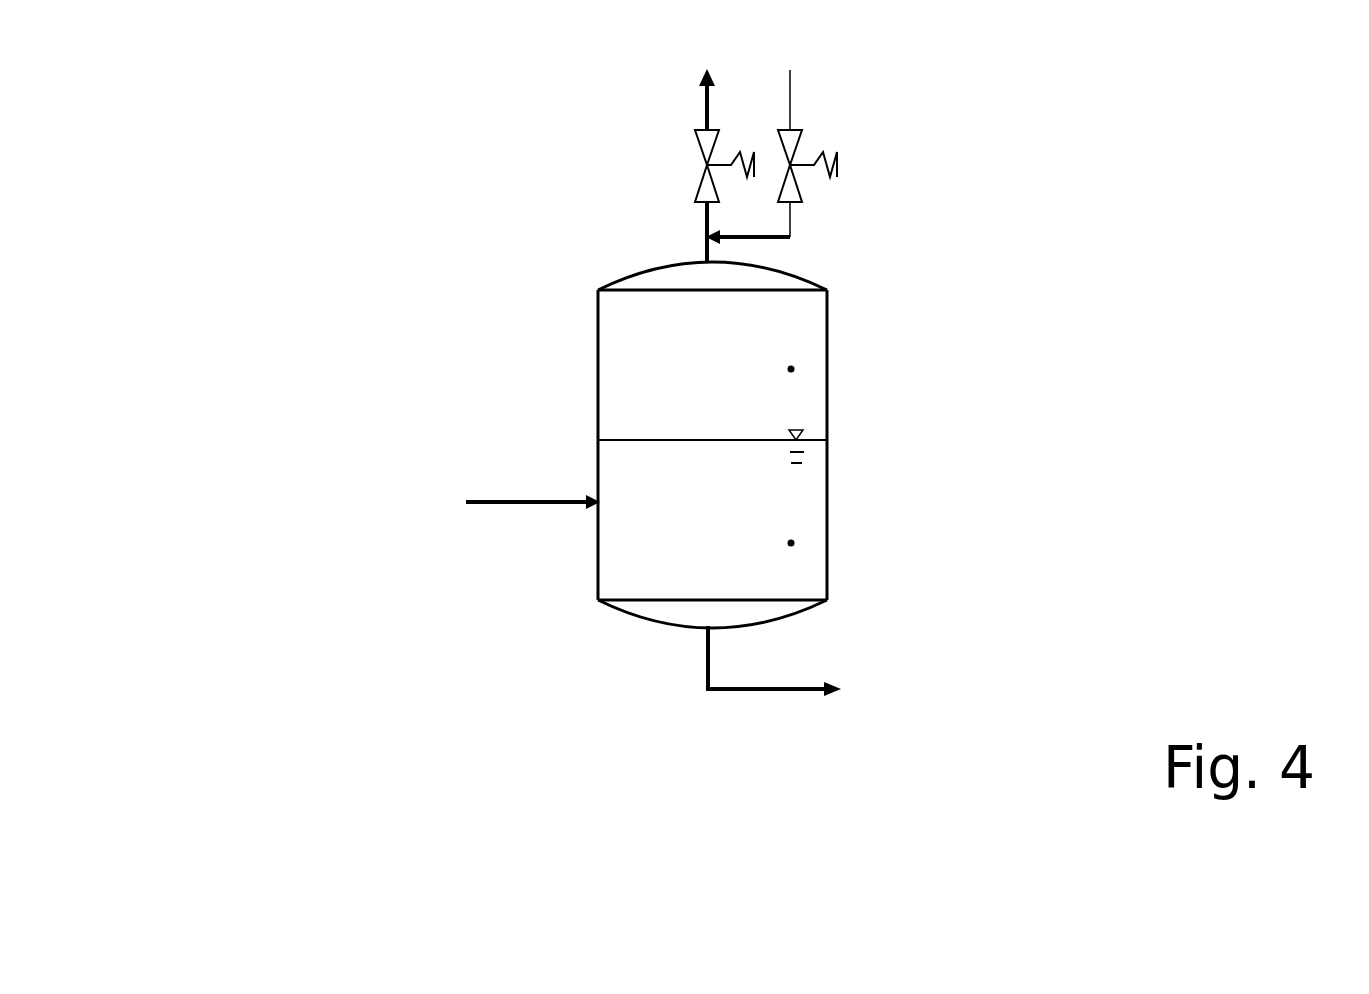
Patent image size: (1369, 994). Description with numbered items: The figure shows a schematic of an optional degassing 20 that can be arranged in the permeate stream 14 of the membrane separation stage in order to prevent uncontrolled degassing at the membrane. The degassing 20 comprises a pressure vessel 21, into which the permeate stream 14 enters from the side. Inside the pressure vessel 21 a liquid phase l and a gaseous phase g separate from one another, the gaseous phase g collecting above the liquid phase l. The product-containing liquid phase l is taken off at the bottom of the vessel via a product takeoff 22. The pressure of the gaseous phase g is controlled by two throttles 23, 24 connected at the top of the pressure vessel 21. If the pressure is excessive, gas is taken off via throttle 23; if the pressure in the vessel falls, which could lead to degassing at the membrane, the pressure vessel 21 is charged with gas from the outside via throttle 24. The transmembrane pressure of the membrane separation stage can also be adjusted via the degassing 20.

The degassing 20 is at (503, 372).
The pressure vessel 21 is at (565, 395).
The permeate stream 14 is at (542, 492).
The product takeoff 22 is at (791, 680).
The throttle 23 is at (692, 158).
The throttle 24 is at (813, 193).
The gaseous phase g is at (791, 369).
The liquid phase l is at (791, 543).